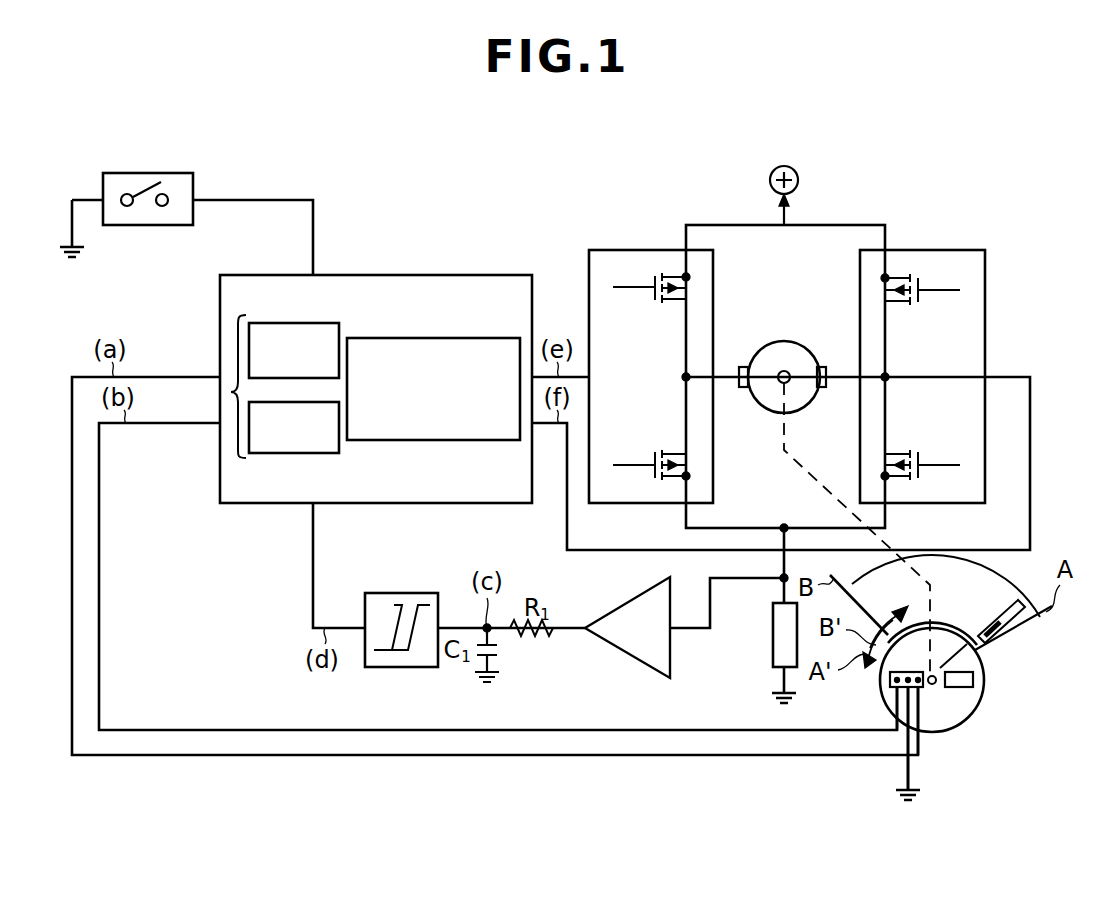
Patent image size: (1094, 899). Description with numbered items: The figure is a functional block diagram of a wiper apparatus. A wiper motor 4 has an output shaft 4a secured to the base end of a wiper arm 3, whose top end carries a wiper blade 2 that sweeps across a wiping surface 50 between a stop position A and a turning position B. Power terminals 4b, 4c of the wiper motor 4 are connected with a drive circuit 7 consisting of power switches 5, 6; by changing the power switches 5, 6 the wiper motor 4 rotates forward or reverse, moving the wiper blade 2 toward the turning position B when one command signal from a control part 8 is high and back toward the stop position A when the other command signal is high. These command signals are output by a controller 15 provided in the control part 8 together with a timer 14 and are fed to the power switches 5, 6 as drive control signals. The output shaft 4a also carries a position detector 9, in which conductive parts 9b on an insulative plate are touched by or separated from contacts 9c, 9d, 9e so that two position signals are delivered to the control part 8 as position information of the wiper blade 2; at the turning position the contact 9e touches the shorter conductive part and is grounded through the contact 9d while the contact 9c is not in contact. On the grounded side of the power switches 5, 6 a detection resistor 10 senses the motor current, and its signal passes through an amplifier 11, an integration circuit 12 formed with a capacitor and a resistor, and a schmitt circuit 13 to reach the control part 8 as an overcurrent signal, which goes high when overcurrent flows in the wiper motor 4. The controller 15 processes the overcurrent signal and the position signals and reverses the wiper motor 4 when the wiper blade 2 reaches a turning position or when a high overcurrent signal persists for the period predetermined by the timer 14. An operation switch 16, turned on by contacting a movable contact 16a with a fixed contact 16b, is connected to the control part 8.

The wiper blade 2 is at (1028, 620).
The wiper arm 3 is at (972, 660).
The wiper motor 4 is at (788, 341).
The output shaft 4a is at (789, 382).
The power terminal 4b is at (743, 367).
The power terminal 4c is at (821, 367).
The power switch 5 is at (628, 258).
The power switch 6 is at (952, 258).
The drive circuit 7 is at (810, 110).
The control part 8 is at (452, 275).
The position detector 9 is at (982, 700).
The conductive part 9b is at (892, 683).
The contact 9c is at (897, 702).
The contact 9d is at (907, 745).
The contact 9e is at (918, 745).
The detection resistor 10 is at (773, 645).
The amplifier 11 is at (647, 665).
The integration circuit 12 is at (500, 657).
The schmitt circuit 13 is at (402, 593).
The timer 14 is at (231, 392).
The controller 15 is at (521, 344).
The operation switch 16 is at (180, 173).
The movable contact 16a is at (138, 190).
The fixed contact 16b is at (168, 197).
The wiping surface 50 is at (995, 565).